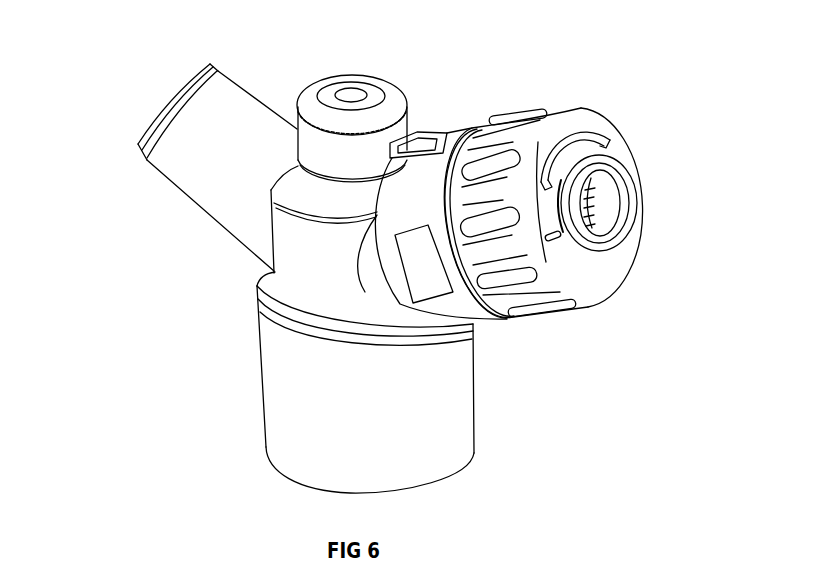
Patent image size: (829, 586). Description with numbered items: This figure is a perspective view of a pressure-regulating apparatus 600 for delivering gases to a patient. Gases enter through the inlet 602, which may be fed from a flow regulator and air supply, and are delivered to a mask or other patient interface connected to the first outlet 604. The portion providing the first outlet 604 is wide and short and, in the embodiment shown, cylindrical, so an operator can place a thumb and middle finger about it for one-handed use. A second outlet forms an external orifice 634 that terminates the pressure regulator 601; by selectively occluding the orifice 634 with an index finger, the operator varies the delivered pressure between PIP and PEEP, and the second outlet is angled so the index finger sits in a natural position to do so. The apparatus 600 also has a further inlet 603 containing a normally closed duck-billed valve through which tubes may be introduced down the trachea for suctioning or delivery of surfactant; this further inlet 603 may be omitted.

The apparatus 600 is at (155, 295).
The pressure regulator 601 is at (586, 336).
The inlet 602 is at (141, 85).
The further inlet 603 is at (365, 85).
The first outlet 604 is at (325, 500).
The orifice 634 is at (616, 185).